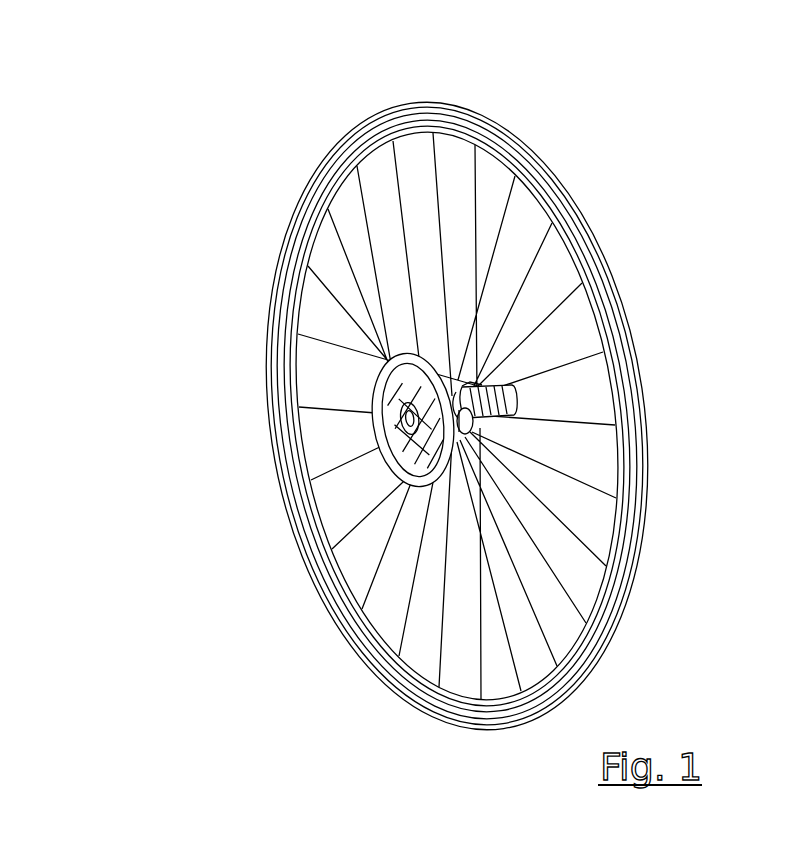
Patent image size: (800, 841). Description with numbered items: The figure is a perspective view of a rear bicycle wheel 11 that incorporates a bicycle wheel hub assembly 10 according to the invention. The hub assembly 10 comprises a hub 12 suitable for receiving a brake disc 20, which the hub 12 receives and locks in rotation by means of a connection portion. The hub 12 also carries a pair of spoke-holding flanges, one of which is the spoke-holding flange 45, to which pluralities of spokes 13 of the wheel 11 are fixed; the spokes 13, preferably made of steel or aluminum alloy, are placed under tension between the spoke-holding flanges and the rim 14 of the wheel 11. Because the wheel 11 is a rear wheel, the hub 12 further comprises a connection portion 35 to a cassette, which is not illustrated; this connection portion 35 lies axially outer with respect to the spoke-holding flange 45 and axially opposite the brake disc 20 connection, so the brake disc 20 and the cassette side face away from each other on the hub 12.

The bicycle wheel 11 is at (441, 404).
The rim 14 is at (453, 120).
The spokes 13 is at (343, 242).
The bicycle wheel hub assembly 10 is at (360, 418).
The brake disc 20 is at (387, 455).
The hub 12 is at (467, 410).
The connection portion to a cassette 35 is at (498, 402).
The spoke-holding flange 45 is at (473, 387).